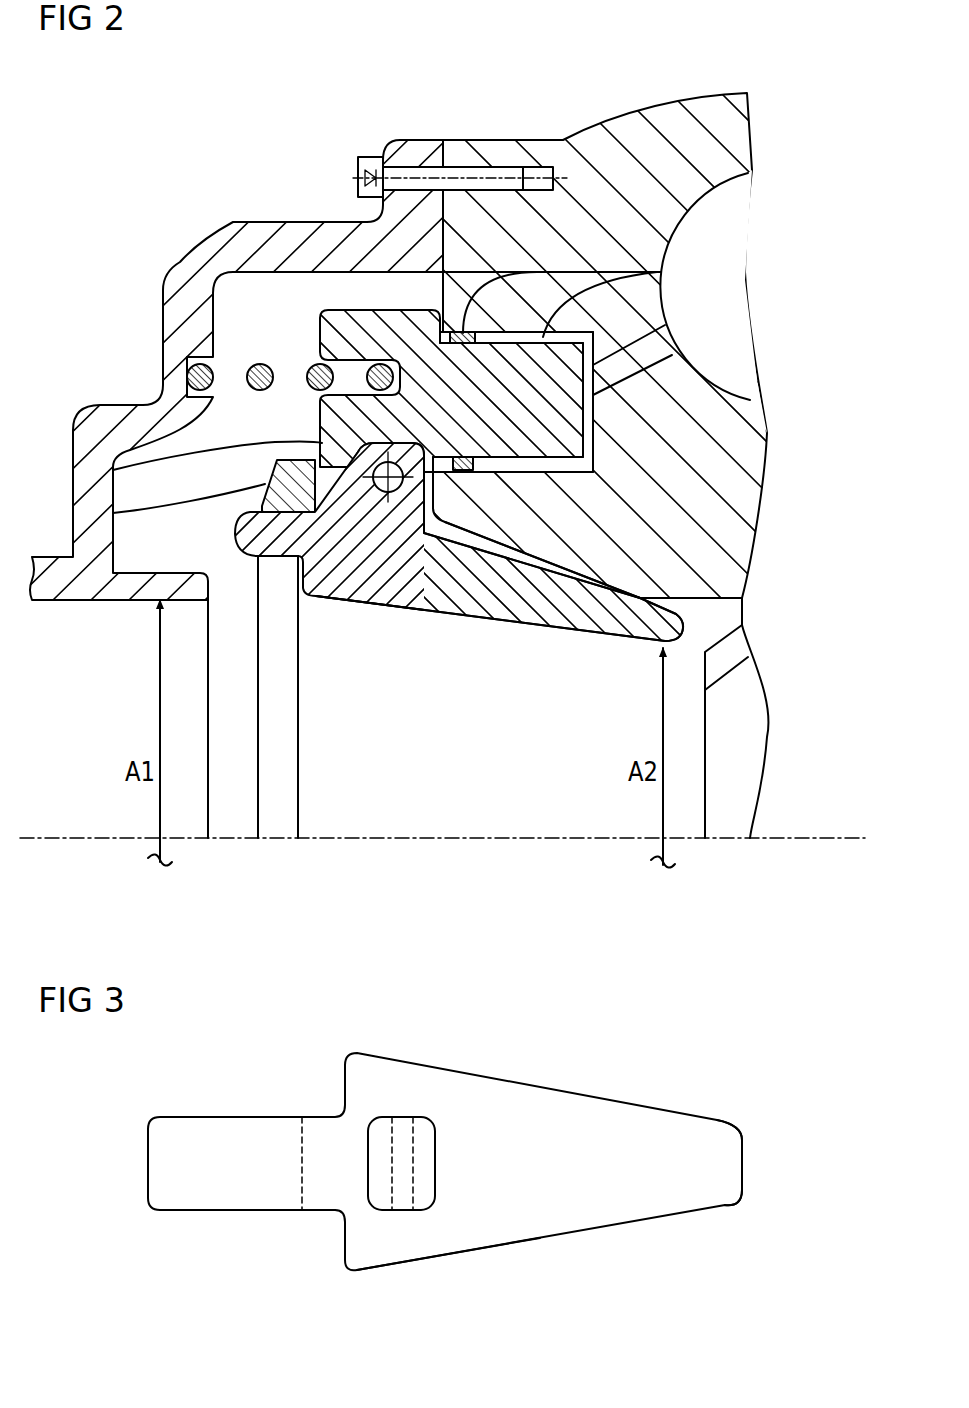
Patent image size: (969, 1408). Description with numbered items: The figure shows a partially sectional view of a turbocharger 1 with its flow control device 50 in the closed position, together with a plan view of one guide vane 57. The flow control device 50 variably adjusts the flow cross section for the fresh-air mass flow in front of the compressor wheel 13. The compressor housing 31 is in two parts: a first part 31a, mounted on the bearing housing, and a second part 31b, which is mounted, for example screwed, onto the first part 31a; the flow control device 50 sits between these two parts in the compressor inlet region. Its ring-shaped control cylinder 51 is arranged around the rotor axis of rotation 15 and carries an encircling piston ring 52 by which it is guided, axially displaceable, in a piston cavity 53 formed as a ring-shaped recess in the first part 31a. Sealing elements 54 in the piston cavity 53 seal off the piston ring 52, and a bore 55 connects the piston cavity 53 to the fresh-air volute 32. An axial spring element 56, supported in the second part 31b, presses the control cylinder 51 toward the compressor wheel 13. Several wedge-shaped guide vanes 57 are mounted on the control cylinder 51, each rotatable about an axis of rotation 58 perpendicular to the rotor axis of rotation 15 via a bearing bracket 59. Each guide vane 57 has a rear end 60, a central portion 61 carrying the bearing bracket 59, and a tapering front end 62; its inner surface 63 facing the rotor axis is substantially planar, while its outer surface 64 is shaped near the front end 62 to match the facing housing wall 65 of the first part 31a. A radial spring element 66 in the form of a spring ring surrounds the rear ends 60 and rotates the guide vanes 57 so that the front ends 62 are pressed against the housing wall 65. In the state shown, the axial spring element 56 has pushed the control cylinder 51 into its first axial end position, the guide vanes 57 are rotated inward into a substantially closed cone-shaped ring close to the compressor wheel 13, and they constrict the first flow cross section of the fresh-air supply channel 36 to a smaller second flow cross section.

In FIG. 2, the turbocharger 1 is at (797, 78).
In FIG. 2, the compressor wheel 13 is at (740, 713).
In FIG. 2, the rotor axis of rotation 15 is at (820, 838).
In FIG. 2, the compressor housing 31 is at (447, 122).
In FIG. 2, the first part of the compressor housing 31a is at (620, 128).
In FIG. 2, the second part of the compressor housing 31b is at (110, 428).
In FIG. 2, the fresh-air volute 32 is at (727, 367).
In FIG. 2, the fresh-air supply channel 36 is at (86, 684).
In FIG. 2, the flow control device 50 is at (503, 285).
In FIG. 2, the control cylinder 51 is at (353, 330).
In FIG. 2, the piston ring 52 is at (560, 420).
In FIG. 2, the piston cavity 53 is at (657, 300).
In FIG. 2, the sealing elements 54 is at (657, 268).
In FIG. 2, the bore 55 is at (653, 350).
In FIG. 2, the axial spring element 56 is at (260, 375).
In FIG. 2, the guide vane 57 is at (470, 590).
In FIG. 3, the guide vane 57 is at (560, 1070).
In FIG. 2, the axis of rotation 58 is at (113, 472).
In FIG. 2, the bearing bracket 59 is at (378, 508).
In FIG. 3, the bearing bracket 59 is at (422, 1163).
In FIG. 2, the rear end 60 is at (248, 568).
In FIG. 3, the rear end 60 is at (217, 1226).
In FIG. 2, the central portion 61 is at (413, 640).
In FIG. 3, the central portion 61 is at (440, 1272).
In FIG. 2, the front end 62 is at (655, 648).
In FIG. 3, the front end 62 is at (733, 1222).
In FIG. 2, the inner surface 63 is at (540, 625).
In FIG. 2, the outer surface 64 is at (510, 548).
In FIG. 2, the housing wall 65 is at (593, 570).
In FIG. 2, the radial spring element 66 is at (113, 513).